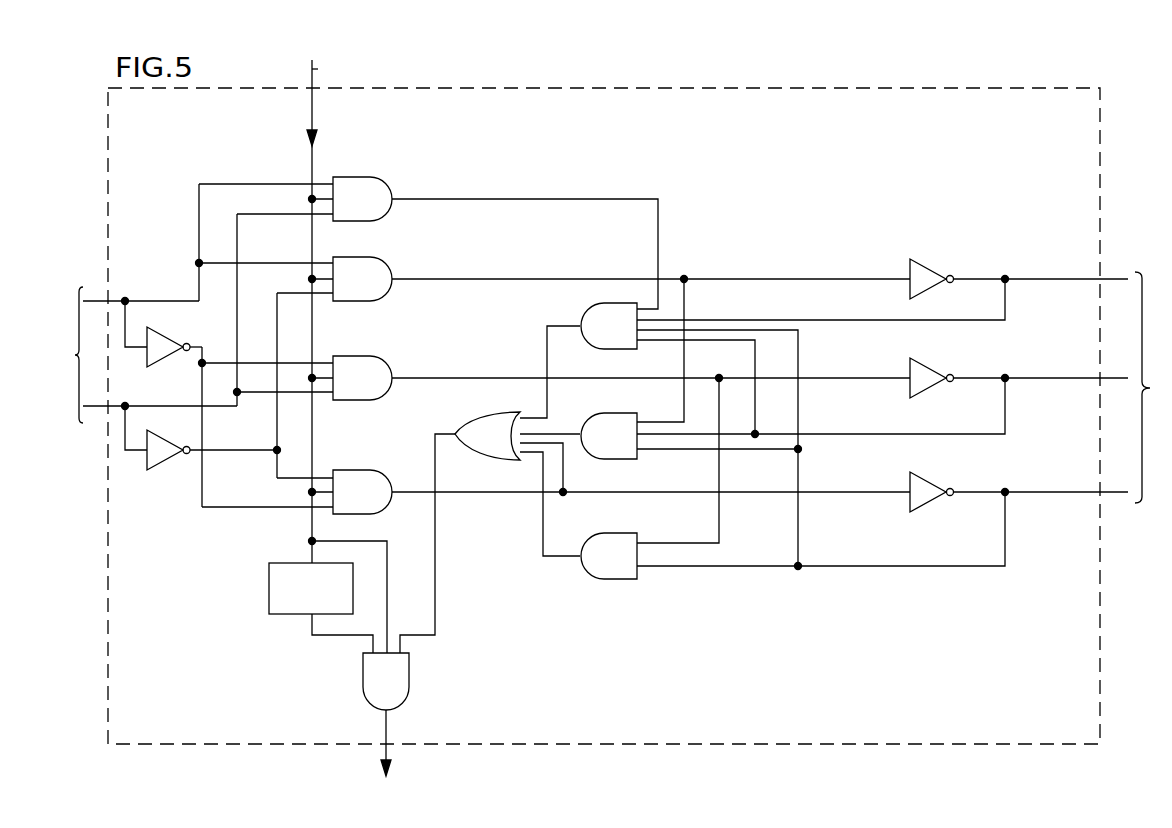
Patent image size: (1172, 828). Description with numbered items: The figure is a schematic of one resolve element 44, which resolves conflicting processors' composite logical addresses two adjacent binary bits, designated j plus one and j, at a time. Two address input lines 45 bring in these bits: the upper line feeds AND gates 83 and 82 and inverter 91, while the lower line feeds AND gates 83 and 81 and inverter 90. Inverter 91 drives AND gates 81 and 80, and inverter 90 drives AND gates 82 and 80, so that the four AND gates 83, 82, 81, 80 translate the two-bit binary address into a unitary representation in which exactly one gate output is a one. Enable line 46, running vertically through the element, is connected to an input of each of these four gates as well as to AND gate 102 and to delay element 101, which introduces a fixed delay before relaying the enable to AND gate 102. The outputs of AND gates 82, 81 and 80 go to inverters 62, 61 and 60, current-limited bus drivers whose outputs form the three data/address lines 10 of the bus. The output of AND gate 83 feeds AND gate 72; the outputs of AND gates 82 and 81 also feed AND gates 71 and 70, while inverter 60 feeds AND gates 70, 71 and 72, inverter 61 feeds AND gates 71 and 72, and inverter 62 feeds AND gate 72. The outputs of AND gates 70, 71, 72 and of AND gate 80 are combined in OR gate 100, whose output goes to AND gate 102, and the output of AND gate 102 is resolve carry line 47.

The resolve element 44 is at (604, 416).
The enable line 46 is at (313, 153).
The address input lines 45 is at (113, 297).
The inverter 91 is at (167, 342).
The inverter 90 is at (173, 459).
The AND gate 83 is at (386, 178).
The AND gate 82 is at (386, 258).
The AND gate 81 is at (383, 356).
The AND gate 80 is at (375, 470).
The AND gate 72 is at (585, 305).
The AND gate 71 is at (595, 413).
The AND gate 70 is at (595, 533).
The OR gate 100 is at (492, 412).
The delay element 101 is at (268, 591).
The AND gate 102 is at (410, 672).
The resolve carry line 47 is at (365, 780).
The inverter 62 is at (908, 268).
The inverter 61 is at (908, 390).
The inverter 60 is at (908, 506).
The data/address lines 10 is at (1044, 278).